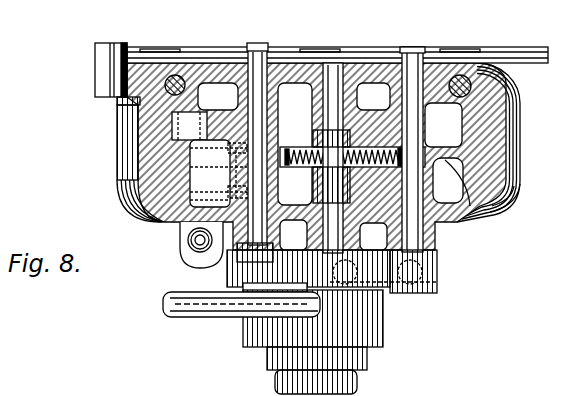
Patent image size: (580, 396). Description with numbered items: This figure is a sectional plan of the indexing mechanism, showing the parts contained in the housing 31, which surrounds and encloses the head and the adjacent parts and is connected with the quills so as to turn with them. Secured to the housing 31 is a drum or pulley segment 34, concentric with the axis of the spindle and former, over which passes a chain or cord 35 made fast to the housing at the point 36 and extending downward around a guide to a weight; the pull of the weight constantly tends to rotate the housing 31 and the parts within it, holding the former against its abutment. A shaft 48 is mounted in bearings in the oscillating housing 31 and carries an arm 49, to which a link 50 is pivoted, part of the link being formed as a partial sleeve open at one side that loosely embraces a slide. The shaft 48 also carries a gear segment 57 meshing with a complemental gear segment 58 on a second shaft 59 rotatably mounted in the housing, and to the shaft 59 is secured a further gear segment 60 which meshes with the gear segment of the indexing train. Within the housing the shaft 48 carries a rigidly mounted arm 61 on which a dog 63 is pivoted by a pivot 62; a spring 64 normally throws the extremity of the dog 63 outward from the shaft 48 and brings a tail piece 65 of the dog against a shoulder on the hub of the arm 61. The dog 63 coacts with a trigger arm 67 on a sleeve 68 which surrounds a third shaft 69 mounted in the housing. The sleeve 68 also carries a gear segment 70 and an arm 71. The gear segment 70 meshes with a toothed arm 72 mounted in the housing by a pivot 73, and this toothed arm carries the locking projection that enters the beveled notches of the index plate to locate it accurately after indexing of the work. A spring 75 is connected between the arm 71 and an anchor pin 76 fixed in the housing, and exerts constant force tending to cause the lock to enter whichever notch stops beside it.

The housing 31 is at (520, 138).
The drum or pulley segment 34 is at (380, 50).
The chain or cord 35 is at (310, 53).
The point 36 is at (125, 43).
The shaft 48 is at (318, 234).
The arm 49 is at (313, 323).
The link 50 is at (223, 318).
The gear segment 57 is at (387, 303).
The complemental gear segment 58 is at (428, 294).
The shaft 59 is at (440, 226).
The gear segment 60 is at (380, 152).
The arm 61 is at (310, 120).
The pivot 62 is at (325, 120).
The dog 63 is at (313, 135).
The spring 64 is at (313, 187).
The tail piece 65 is at (360, 148).
The trigger arm 67 is at (249, 148).
The sleeve 68 is at (247, 167).
The third shaft 69 is at (247, 192).
The gear segment 70 is at (222, 118).
The arm 71 is at (210, 193).
The toothed arm 72 is at (186, 108).
The pivot 73 is at (123, 107).
The spring 75 is at (420, 131).
The anchor pin 76 is at (482, 216).